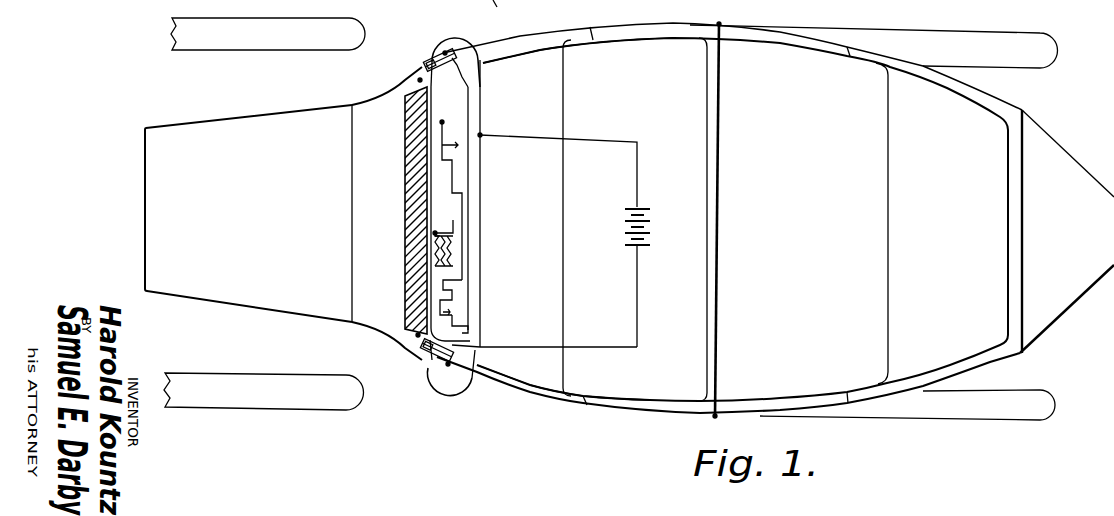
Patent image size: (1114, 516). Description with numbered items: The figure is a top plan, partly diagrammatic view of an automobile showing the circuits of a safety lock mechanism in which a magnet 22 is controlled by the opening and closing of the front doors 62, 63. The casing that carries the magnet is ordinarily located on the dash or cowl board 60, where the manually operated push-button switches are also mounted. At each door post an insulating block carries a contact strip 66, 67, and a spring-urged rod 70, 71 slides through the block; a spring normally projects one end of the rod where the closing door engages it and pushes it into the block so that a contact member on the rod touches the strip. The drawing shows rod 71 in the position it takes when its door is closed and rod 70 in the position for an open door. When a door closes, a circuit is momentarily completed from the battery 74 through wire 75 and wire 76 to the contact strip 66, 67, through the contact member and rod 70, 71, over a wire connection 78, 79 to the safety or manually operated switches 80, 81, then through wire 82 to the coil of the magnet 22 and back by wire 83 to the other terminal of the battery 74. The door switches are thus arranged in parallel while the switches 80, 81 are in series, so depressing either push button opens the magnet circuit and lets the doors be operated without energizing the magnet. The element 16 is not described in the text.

The shell body 16 is at (849, 393).
The magnet 22 is at (427, 254).
The dash or cowl board 60 is at (405, 172).
The front door 62 is at (520, 37).
The front door 63 is at (506, 382).
The contact strip 66 is at (424, 63).
The contact strip 67 is at (421, 362).
The rod 70 is at (453, 87).
The rod 71 is at (458, 356).
The battery 74 is at (651, 233).
The wire 75 is at (540, 132).
The wire 76 is at (483, 240).
The wire connection 78 is at (477, 218).
The wire connection 79 is at (476, 333).
The safety or manually operated switch 80 is at (455, 297).
The safety or manually operated switch 81 is at (450, 171).
The wire 82 is at (446, 236).
The wire 83 is at (590, 344).